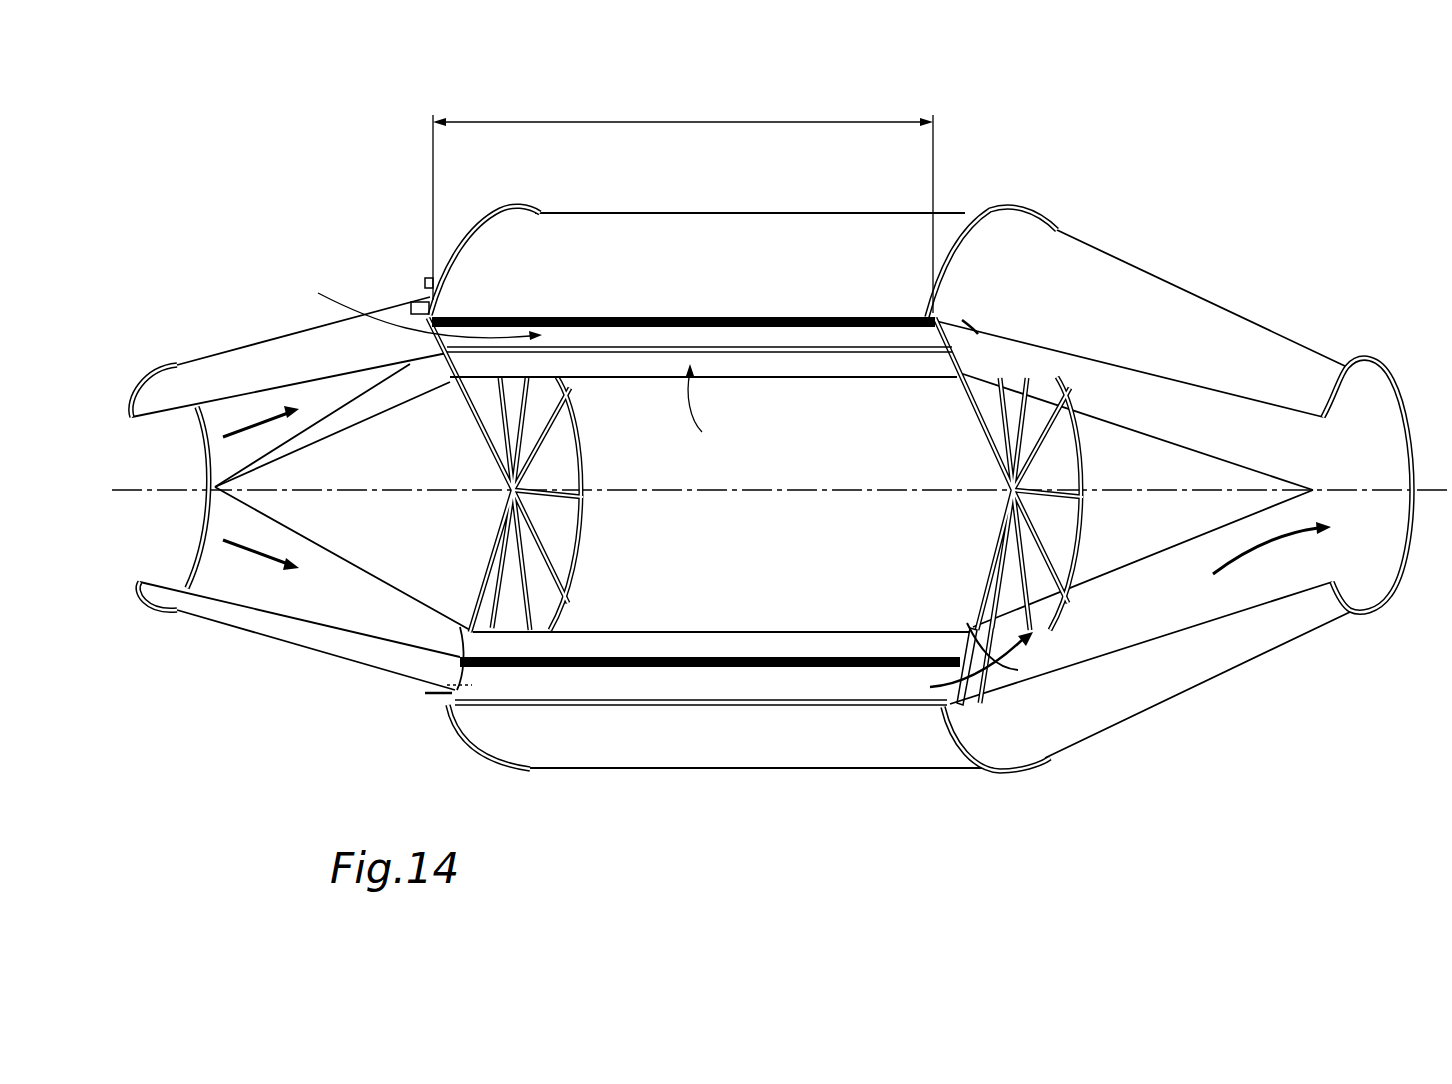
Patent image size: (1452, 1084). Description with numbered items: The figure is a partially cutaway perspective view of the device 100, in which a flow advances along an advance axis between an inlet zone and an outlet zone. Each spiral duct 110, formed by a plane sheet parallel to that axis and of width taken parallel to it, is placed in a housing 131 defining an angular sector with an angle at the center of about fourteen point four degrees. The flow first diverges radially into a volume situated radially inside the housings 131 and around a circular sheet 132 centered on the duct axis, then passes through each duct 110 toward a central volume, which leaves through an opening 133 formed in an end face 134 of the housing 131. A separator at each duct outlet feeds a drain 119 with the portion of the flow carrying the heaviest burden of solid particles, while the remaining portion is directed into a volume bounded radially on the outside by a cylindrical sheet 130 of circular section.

The device 100 is at (1196, 224).
The duct 110 is at (683, 197).
The drain 119 is at (426, 298).
The sheet 130 is at (960, 218).
The housing 131 is at (967, 325).
The sheet 132 is at (803, 378).
The opening 133 is at (977, 712).
The end face 134 is at (961, 652).